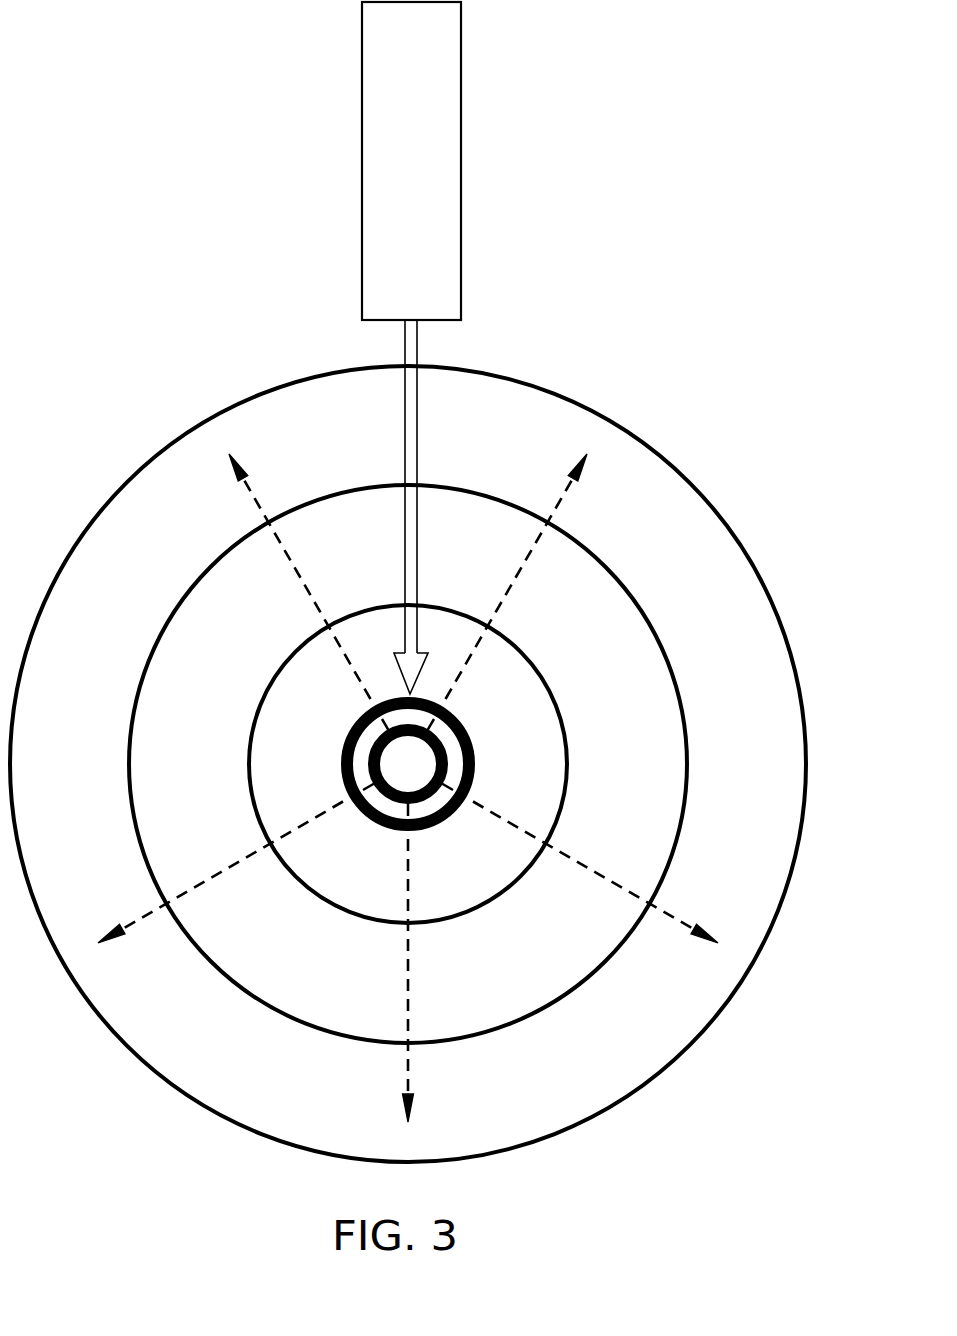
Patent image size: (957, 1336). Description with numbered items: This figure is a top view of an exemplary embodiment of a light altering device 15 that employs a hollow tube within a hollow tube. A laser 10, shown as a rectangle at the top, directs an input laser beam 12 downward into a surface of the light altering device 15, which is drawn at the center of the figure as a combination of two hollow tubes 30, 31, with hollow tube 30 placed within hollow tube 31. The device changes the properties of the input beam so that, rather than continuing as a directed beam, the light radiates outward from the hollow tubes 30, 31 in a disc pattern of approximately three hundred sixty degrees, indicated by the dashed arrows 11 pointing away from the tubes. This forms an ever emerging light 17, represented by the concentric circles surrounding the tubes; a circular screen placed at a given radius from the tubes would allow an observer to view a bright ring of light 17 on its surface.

The laser 10 is at (362, 145).
The laser beam 12 is at (415, 468).
The arrows 11 is at (300, 577).
The ever emerging light 17 is at (562, 713).
The hollow tube 30 is at (367, 730).
The hollow tube 31 is at (378, 823).
The light altering device 15 is at (434, 838).